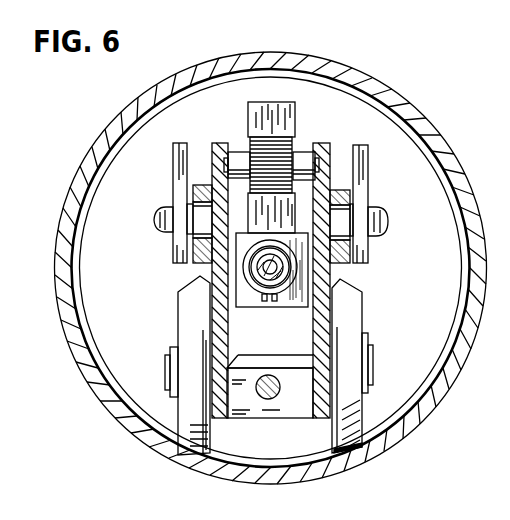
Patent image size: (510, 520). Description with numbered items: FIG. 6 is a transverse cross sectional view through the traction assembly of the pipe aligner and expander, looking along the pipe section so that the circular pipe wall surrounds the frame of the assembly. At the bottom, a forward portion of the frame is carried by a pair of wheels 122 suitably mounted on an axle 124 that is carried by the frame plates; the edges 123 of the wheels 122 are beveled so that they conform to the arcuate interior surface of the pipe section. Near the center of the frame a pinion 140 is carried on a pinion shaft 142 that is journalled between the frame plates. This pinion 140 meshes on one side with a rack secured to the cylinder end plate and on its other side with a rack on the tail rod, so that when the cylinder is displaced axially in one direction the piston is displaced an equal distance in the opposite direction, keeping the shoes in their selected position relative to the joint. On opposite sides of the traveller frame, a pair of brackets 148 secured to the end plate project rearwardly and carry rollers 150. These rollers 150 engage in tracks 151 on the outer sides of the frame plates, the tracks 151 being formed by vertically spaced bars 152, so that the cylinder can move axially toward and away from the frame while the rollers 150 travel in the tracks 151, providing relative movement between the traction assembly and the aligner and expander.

The wheels 122 is at (347, 300).
The edges 123 is at (355, 448).
The axle 124 is at (213, 348).
The pinion 140 is at (250, 150).
The pinion shaft 142 is at (305, 150).
The brackets 148 is at (175, 162).
The rollers 150 is at (343, 212).
The tracks 151 is at (193, 200).
The vertically spaced bars 152 is at (256, 268).